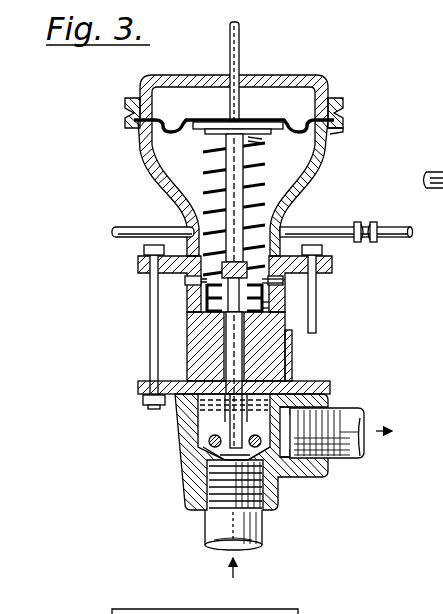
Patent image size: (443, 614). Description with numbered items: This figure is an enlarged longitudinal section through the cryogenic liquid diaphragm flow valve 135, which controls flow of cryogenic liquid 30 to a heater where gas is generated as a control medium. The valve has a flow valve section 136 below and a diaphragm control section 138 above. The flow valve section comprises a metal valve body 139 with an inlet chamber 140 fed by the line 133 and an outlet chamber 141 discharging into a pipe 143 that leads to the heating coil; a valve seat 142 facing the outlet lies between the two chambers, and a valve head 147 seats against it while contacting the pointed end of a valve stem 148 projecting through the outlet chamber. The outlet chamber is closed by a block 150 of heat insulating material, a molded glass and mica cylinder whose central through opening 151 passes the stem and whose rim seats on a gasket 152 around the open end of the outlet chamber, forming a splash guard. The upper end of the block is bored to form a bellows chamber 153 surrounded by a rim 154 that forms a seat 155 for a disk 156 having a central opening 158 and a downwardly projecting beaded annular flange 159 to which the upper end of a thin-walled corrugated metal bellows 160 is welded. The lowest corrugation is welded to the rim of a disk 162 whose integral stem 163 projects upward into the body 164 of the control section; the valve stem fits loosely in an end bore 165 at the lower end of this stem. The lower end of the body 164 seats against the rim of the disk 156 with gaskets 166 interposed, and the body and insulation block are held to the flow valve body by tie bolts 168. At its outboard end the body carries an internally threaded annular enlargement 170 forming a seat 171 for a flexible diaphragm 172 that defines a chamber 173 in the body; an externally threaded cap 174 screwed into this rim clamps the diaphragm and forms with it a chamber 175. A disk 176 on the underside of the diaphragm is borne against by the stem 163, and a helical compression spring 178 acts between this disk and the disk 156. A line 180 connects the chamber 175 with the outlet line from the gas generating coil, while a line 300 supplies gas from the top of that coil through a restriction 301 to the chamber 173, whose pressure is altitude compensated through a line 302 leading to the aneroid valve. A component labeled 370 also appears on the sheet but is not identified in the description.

The cryogenic liquid 30 is at (264, 427).
The line 133 is at (252, 541).
The cryogenic liquid diaphragm flow valve 135 is at (347, 83).
The flow valve section 136 is at (182, 475).
The diaphragm control section 138 is at (142, 158).
The valve body 139 is at (178, 455).
The inlet chamber 140 is at (208, 484).
The outlet chamber 141 is at (200, 426).
The valve seat 142 is at (244, 461).
The pipe 143 is at (348, 408).
The valve head 147 is at (258, 437).
The valve stem 148 is at (244, 344).
The block of heat insulating material 150 is at (286, 356).
The central through opening 151 is at (286, 368).
The gasket 152 is at (292, 393).
The bellows chamber 153 is at (205, 312).
The rim 154 is at (284, 280).
The seat 155 is at (284, 286).
The disk 156 is at (198, 281).
The central opening 158 is at (262, 266).
The annular flange 159 is at (264, 300).
The metal bellows 160 is at (264, 308).
The disk 162 is at (222, 308).
The stem 163 is at (240, 197).
The body 164 is at (298, 194).
The end bore 165 is at (222, 326).
The gaskets 166 is at (186, 278).
The tie bolts 168 is at (149, 338).
The internally threaded annular enlargement 170 is at (344, 113).
The seat 171 is at (332, 135).
The flexible diaphragm 172 is at (168, 120).
The chamber 173 is at (192, 160).
The cap 174 is at (285, 65).
The chamber 175 is at (283, 108).
The disk 176 is at (238, 111).
The helical compression spring 178 is at (262, 142).
The line 180 is at (229, 43).
The line 300 is at (405, 233).
The restriction 301 is at (362, 240).
The line 302 is at (128, 228).
The controller 370 is at (170, 609).